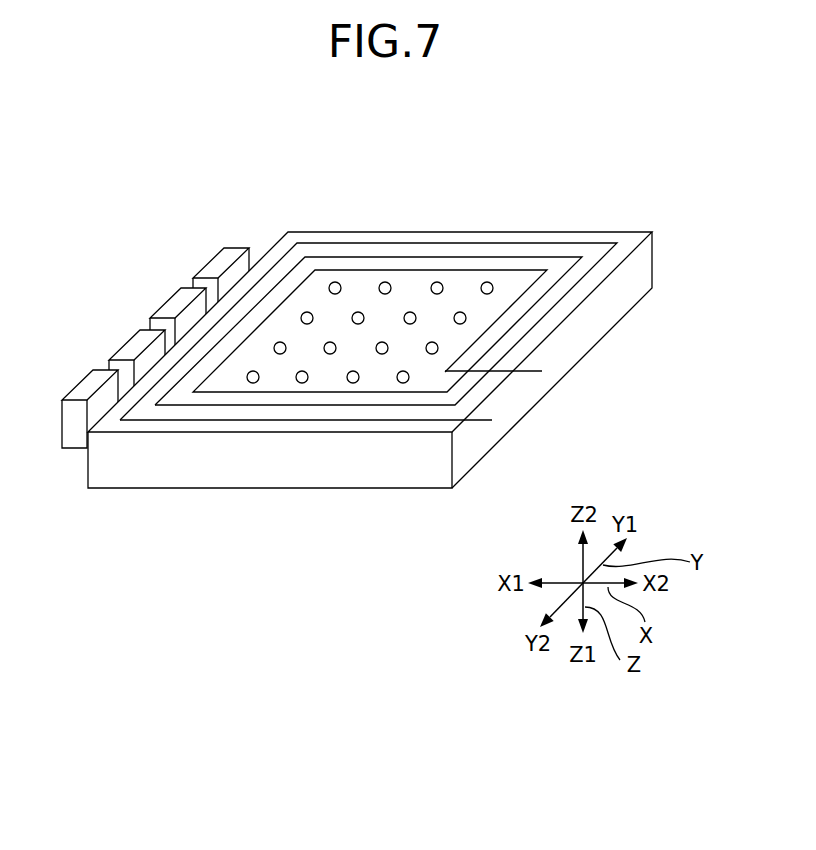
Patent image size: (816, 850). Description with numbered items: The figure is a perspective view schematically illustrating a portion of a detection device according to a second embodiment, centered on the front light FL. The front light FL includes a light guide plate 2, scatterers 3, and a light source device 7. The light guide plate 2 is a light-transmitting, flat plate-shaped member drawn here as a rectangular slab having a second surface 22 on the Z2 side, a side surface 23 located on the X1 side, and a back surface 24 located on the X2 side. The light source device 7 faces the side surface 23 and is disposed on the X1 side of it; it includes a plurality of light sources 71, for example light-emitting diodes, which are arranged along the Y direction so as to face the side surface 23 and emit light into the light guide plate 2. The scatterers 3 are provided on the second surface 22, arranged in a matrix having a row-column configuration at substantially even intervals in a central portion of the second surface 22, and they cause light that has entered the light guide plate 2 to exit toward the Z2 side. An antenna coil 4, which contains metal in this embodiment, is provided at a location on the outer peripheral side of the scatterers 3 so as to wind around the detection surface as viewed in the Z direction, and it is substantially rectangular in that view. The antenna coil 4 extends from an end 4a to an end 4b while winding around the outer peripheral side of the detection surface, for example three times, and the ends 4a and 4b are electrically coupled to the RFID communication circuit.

The light guide plate 2 is at (431, 219).
The second surface 22 is at (598, 242).
The side surface 23 is at (88, 458).
The back surface 24 is at (622, 282).
The scatterers 3 is at (493, 289).
The antenna coil 4 is at (346, 268).
The end of antenna coil 4a is at (490, 421).
The end of antenna coil 4b is at (542, 371).
The light source device 7 is at (155, 326).
The light sources 71 is at (90, 388).
The front light FL is at (276, 195).